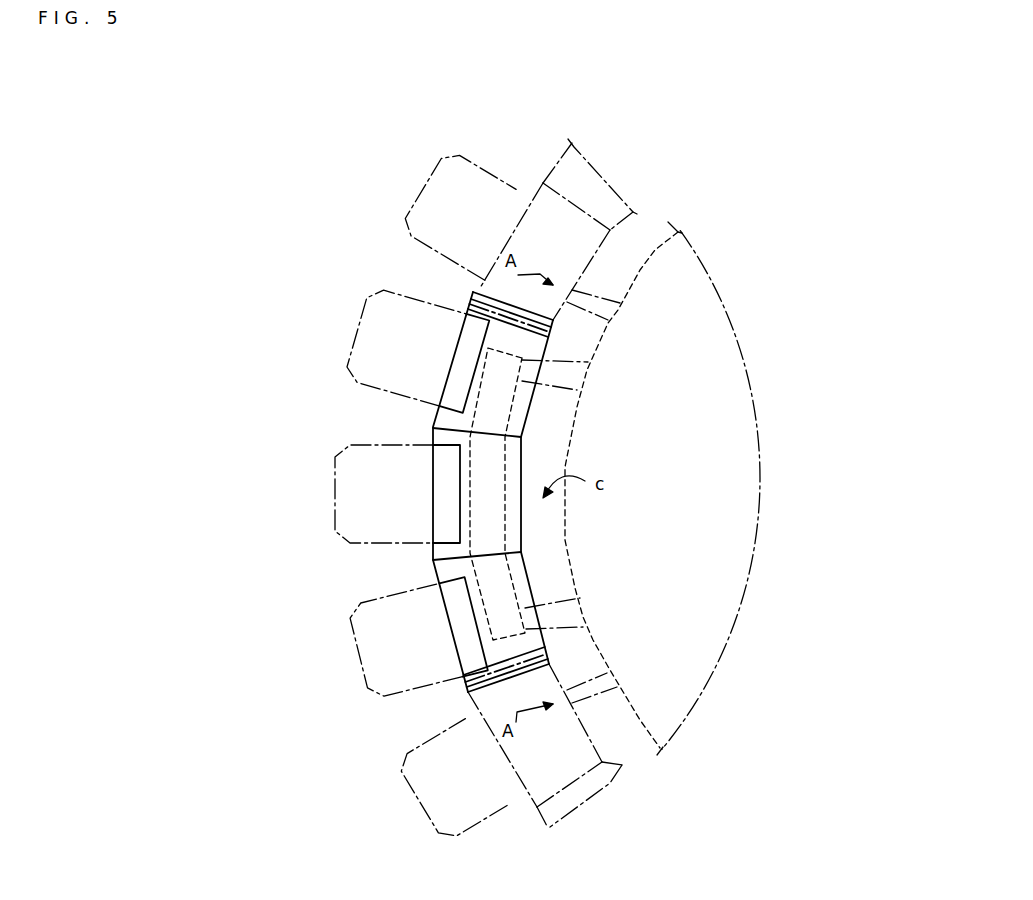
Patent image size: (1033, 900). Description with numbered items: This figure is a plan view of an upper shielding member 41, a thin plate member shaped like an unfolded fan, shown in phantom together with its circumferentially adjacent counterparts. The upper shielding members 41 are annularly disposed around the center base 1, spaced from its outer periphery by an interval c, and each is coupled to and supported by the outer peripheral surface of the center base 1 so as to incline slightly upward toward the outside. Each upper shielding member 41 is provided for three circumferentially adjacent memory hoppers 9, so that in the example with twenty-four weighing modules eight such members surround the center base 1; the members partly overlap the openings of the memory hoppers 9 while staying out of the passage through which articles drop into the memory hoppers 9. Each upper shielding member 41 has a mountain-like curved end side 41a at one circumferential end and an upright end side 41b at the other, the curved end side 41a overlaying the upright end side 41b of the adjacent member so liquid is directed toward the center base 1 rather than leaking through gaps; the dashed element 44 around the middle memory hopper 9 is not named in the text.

The center base 1 is at (695, 382).
The memory hopper 9 is at (363, 444).
The upper shielding member 41 is at (407, 515).
The curved end side 41a is at (493, 297).
The upright end side 41b is at (487, 693).
The coil / insulator 44 is at (590, 360).